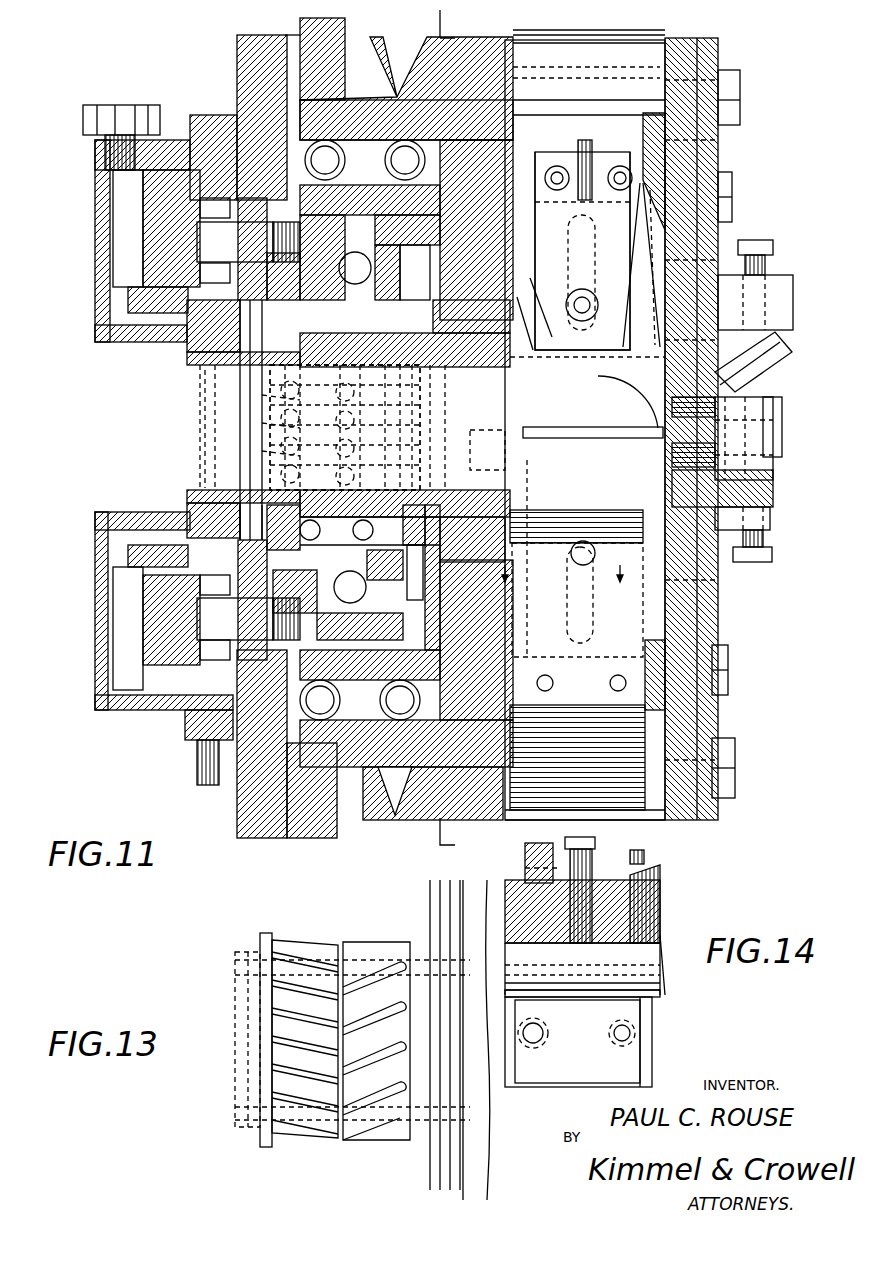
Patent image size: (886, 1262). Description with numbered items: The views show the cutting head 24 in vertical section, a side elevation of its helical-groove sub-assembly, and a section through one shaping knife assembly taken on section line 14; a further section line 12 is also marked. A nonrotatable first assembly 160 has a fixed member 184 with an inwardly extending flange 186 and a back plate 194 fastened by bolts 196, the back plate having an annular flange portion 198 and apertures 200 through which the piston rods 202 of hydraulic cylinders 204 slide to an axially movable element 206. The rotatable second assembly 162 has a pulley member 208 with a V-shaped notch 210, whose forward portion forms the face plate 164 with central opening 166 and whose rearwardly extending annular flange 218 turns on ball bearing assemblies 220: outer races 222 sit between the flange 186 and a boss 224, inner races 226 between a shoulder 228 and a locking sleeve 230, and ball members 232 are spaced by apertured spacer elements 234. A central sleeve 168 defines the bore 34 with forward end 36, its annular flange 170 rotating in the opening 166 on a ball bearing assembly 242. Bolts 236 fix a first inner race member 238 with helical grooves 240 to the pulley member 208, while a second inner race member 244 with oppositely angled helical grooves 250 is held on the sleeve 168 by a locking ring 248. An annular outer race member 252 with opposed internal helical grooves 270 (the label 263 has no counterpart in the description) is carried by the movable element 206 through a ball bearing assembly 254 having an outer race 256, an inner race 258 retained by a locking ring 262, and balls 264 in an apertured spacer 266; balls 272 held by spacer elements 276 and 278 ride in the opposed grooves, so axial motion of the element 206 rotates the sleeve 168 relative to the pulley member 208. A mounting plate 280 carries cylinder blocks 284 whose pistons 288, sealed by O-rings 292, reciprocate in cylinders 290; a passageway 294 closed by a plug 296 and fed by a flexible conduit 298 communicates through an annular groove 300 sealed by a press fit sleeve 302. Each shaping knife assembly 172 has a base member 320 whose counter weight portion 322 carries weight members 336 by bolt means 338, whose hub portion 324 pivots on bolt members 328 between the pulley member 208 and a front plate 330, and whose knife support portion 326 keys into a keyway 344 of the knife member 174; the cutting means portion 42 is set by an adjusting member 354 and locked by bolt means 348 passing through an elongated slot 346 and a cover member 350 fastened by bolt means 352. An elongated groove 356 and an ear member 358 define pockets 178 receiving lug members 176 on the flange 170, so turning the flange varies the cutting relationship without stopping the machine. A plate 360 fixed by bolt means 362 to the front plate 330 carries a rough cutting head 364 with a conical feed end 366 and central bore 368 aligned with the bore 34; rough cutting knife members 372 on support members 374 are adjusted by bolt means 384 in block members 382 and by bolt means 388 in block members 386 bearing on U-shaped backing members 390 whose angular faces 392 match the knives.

In FIG. 11, the section line 12 is at (440, 14).
In FIG. 11, the section line 14 is at (563, 582).
In FIG. 11, the cutting head 24 is at (760, 105).
In FIG. 11, the central bore 34 is at (500, 411).
In FIG. 13, the central bore 34 is at (240, 972).
In FIG. 11, the forward end 36 is at (598, 378).
In FIG. 11, the cutting means portion 42 is at (535, 432).
In FIG. 11, the first assembly 160 is at (283, 24).
In FIG. 11, the second assembly 162 is at (505, 43).
In FIG. 11, the face plate 164 is at (505, 116).
In FIG. 11, the central opening 166 is at (510, 255).
In FIG. 11, the central sleeve 168 is at (468, 506).
In FIG. 11, the annular flange 170 is at (515, 283).
In FIG. 13, the annular flange 170 is at (478, 1155).
In FIG. 11, the shaping knife assembly 172 is at (648, 198).
In FIG. 14, the shaping knife assembly 172 is at (662, 943).
In FIG. 11, the knife member 174 is at (662, 372).
In FIG. 14, the knife member 174 is at (660, 912).
In FIG. 11, the lug members 176 is at (522, 300).
In FIG. 14, the pockets 178 is at (522, 872).
In FIG. 11, the fixed member 184 is at (305, 18).
In FIG. 11, the inwardly extending flange 186 is at (505, 100).
In FIG. 11, the back plate 194 is at (237, 50).
In FIG. 11, the bolts 196 is at (245, 75).
In FIG. 11, the annular flange portion 198 is at (400, 232).
In FIG. 11, the apertures 200 is at (215, 396).
In FIG. 11, the piston rods 202 is at (215, 461).
In FIG. 11, the hydraulic cylinders 204 is at (108, 345).
In FIG. 11, the axially movable element 206 is at (395, 247).
In FIG. 11, the pulley member 208 is at (462, 44).
In FIG. 11, the V-shaped notch 210 is at (400, 58).
In FIG. 11, the rearwardly extending annular flange 218 is at (403, 632).
In FIG. 11, the ball bearing assemblies 220 is at (360, 800).
In FIG. 11, the outer races 222 is at (320, 700).
In FIG. 11, the boss 224 is at (250, 115).
In FIG. 11, the inner races 226 is at (531, 681).
In FIG. 11, the shoulder 228 is at (470, 670).
In FIG. 11, the locking sleeve 230 is at (248, 228).
In FIG. 11, the ball members 232 is at (402, 430).
In FIG. 11, the apertured spacer elements 234 is at (244, 600).
In FIG. 11, the bolts 236 is at (545, 205).
In FIG. 11, the first inner race member 238 is at (465, 396).
In FIG. 13, the first inner race member 238 is at (415, 945).
In FIG. 11, the helical grooves 240 is at (395, 405).
In FIG. 13, the helical grooves 240 is at (380, 1032).
In FIG. 11, the ball bearing assembly 242 is at (505, 268).
In FIG. 11, the second inner race member 244 is at (270, 462).
In FIG. 13, the second inner race member 244 is at (312, 942).
In FIG. 11, the locking ring 248 is at (220, 365).
In FIG. 13, the locking ring 248 is at (262, 945).
In FIG. 11, the helical grooves 250 is at (272, 425).
In FIG. 13, the helical grooves 250 is at (312, 1035).
In FIG. 11, the annular outer race member 252 is at (416, 570).
In FIG. 11, the ball bearing assembly 254 is at (416, 599).
In FIG. 11, the outer race 256 is at (416, 610).
In FIG. 11, the inner race 258 is at (416, 588).
In FIG. 11, the locking ring 262 is at (246, 522).
In FIG. 11, the teeth 263 is at (419, 473).
In FIG. 11, the balls 264 is at (350, 587).
In FIG. 11, the apertured spacer 266 is at (372, 268).
In FIG. 11, the helical grooves 270 is at (289, 456).
In FIG. 11, the balls 272 is at (283, 409).
In FIG. 11, the spacer elements 276 is at (253, 420).
In FIG. 11, the spacer elements 278 is at (418, 300).
In FIG. 11, the mounting plate 280 is at (200, 115).
In FIG. 11, the cylinder blocks 284 is at (96, 250).
In FIG. 11, the pistons 288 is at (113, 215).
In FIG. 11, the cylinders 290 is at (128, 300).
In FIG. 11, the O-rings 292 is at (143, 280).
In FIG. 11, the continuous passageway 294 is at (110, 335).
In FIG. 11, the plug 296 is at (105, 105).
In FIG. 11, the flexible conduit 298 is at (197, 756).
In FIG. 11, the annular groove 300 is at (205, 405).
In FIG. 11, the press fit sleeve 302 is at (190, 356).
In FIG. 11, the base member 320 is at (670, 38).
In FIG. 14, the base member 320 is at (662, 993).
In FIG. 11, the counter weight portion 322 is at (630, 45).
In FIG. 14, the counter weight portion 322 is at (648, 1046).
In FIG. 11, the hub portion 324 is at (655, 45).
In FIG. 11, the knife support portion 326 is at (554, 613).
In FIG. 11, the bolt members 328 is at (735, 70).
In FIG. 11, the front plate 330 is at (718, 700).
In FIG. 11, the weight members 336 is at (580, 710).
In FIG. 14, the weight members 336 is at (568, 1075).
In FIG. 14, the bolt means 338 is at (612, 1042).
In FIG. 11, the keyway 344 is at (595, 252).
In FIG. 14, the keyway 344 is at (595, 947).
In FIG. 11, the elongated slot 346 is at (548, 545).
In FIG. 14, the elongated slot 346 is at (655, 890).
In FIG. 11, the bolt means 348 is at (590, 282).
In FIG. 14, the bolt means 348 is at (640, 845).
In FIG. 11, the cover member 350 is at (582, 140).
In FIG. 14, the cover member 350 is at (650, 862).
In FIG. 11, the bolt means 352 is at (620, 166).
In FIG. 14, the bolt means 352 is at (573, 953).
In FIG. 11, the adjusting member 354 is at (610, 150).
In FIG. 11, the elongated groove 356 is at (525, 381).
In FIG. 14, the elongated groove 356 is at (510, 888).
In FIG. 11, the ear member 358 is at (575, 320).
In FIG. 14, the ear member 358 is at (525, 850).
In FIG. 11, the plate 360 is at (718, 238).
In FIG. 11, the bolt means 362 is at (732, 190).
In FIG. 11, the rough cutting head 364 is at (668, 472).
In FIG. 11, the conical feed end 366 is at (772, 476).
In FIG. 11, the central bore 368 is at (728, 462).
In FIG. 11, the rough cutting knife member 372 is at (785, 345).
In FIG. 11, the rough cutting knife support members 374 is at (795, 372).
In FIG. 11, the block members 382 is at (770, 512).
In FIG. 11, the adjusting bolt means 384 is at (765, 546).
In FIG. 11, the block members 386 is at (780, 275).
In FIG. 11, the bolt means 388 is at (760, 240).
In FIG. 11, the U-shaped backing members 390 is at (758, 351).
In FIG. 11, the angular faces 392 is at (785, 326).